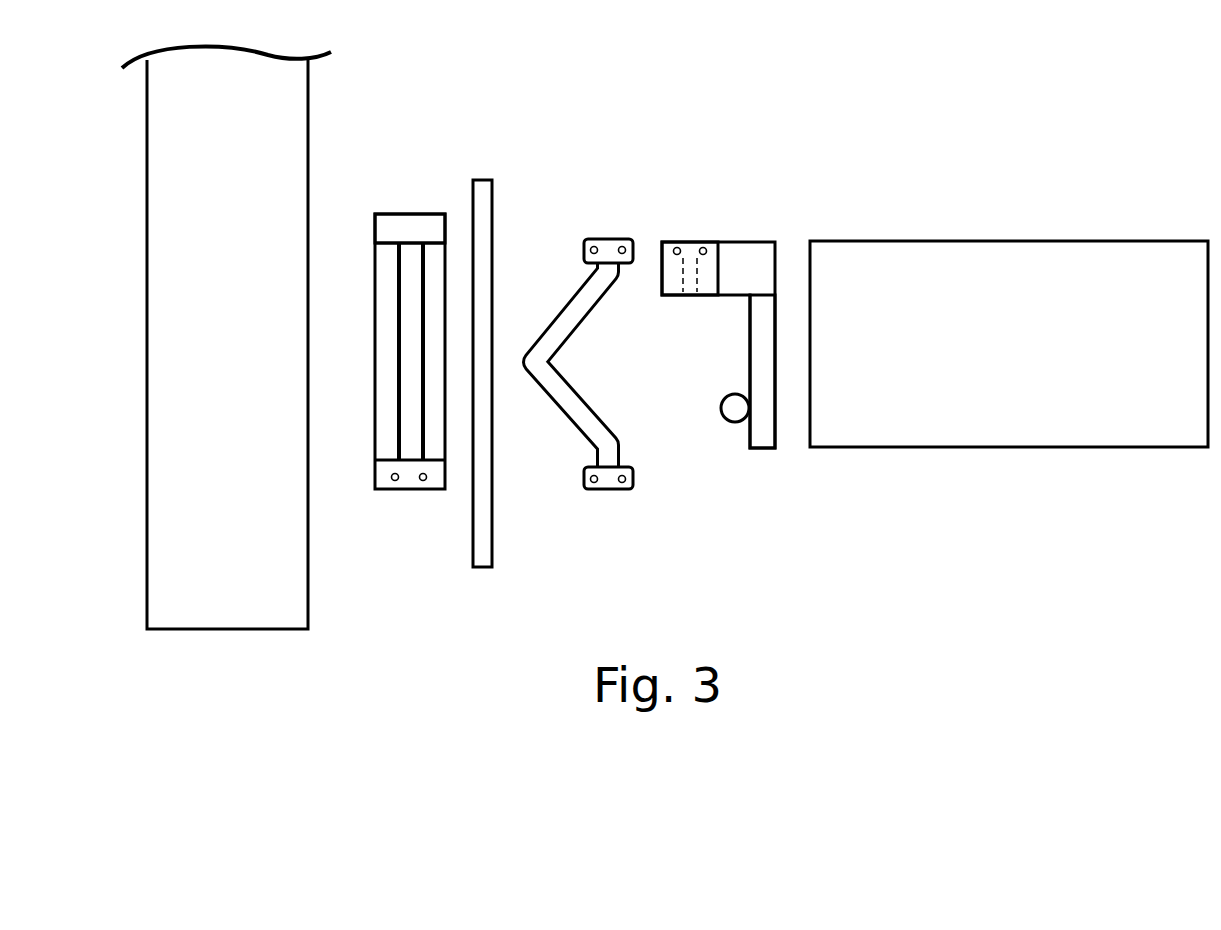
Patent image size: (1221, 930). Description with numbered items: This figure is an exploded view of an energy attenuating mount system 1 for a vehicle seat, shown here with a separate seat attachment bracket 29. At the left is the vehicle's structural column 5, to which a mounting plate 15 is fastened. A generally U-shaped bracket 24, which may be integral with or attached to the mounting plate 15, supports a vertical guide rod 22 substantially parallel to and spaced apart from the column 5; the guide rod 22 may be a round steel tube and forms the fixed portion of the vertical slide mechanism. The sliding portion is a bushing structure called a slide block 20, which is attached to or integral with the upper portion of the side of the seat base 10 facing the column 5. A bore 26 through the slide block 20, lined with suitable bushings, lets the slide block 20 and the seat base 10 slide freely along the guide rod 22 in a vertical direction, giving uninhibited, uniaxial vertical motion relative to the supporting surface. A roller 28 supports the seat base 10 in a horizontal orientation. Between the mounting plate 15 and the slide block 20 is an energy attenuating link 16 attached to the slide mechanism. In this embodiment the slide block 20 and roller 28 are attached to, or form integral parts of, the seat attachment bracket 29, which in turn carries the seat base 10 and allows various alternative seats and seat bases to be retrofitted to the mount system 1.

The mount system 1 is at (868, 93).
The structural column 5 is at (308, 96).
The seat base 10 is at (950, 241).
The mounting plate 15 is at (493, 215).
The energy attenuating link 16 is at (607, 490).
The slide block 20 is at (720, 273).
The vertical guide rod 22 is at (410, 403).
The U-shaped bracket 24 is at (408, 219).
The bore 26 is at (688, 284).
The roller 28 is at (735, 424).
The seat attachment bracket 29 is at (760, 362).